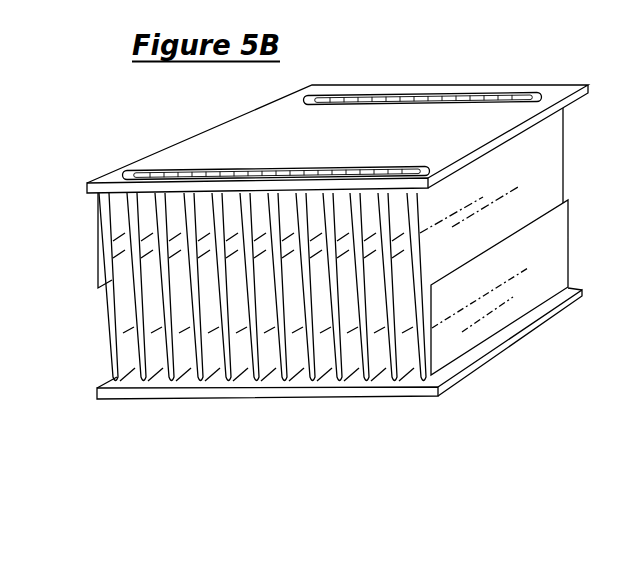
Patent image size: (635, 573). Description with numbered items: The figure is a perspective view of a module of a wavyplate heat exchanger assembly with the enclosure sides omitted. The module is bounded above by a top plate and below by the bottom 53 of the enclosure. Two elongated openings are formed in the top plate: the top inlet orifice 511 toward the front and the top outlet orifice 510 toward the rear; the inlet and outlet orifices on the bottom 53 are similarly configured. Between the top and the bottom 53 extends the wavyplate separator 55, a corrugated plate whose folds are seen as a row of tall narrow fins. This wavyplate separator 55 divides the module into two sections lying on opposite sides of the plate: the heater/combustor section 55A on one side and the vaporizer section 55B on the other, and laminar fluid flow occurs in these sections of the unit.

The top outlet orifice 510 is at (492, 102).
The top inlet orifice 511 is at (153, 170).
The wavyplate separator 55 is at (331, 265).
The heater/combustor section 55A is at (120, 235).
The vaporizer section 55B is at (188, 345).
The bottom 53 is at (487, 362).